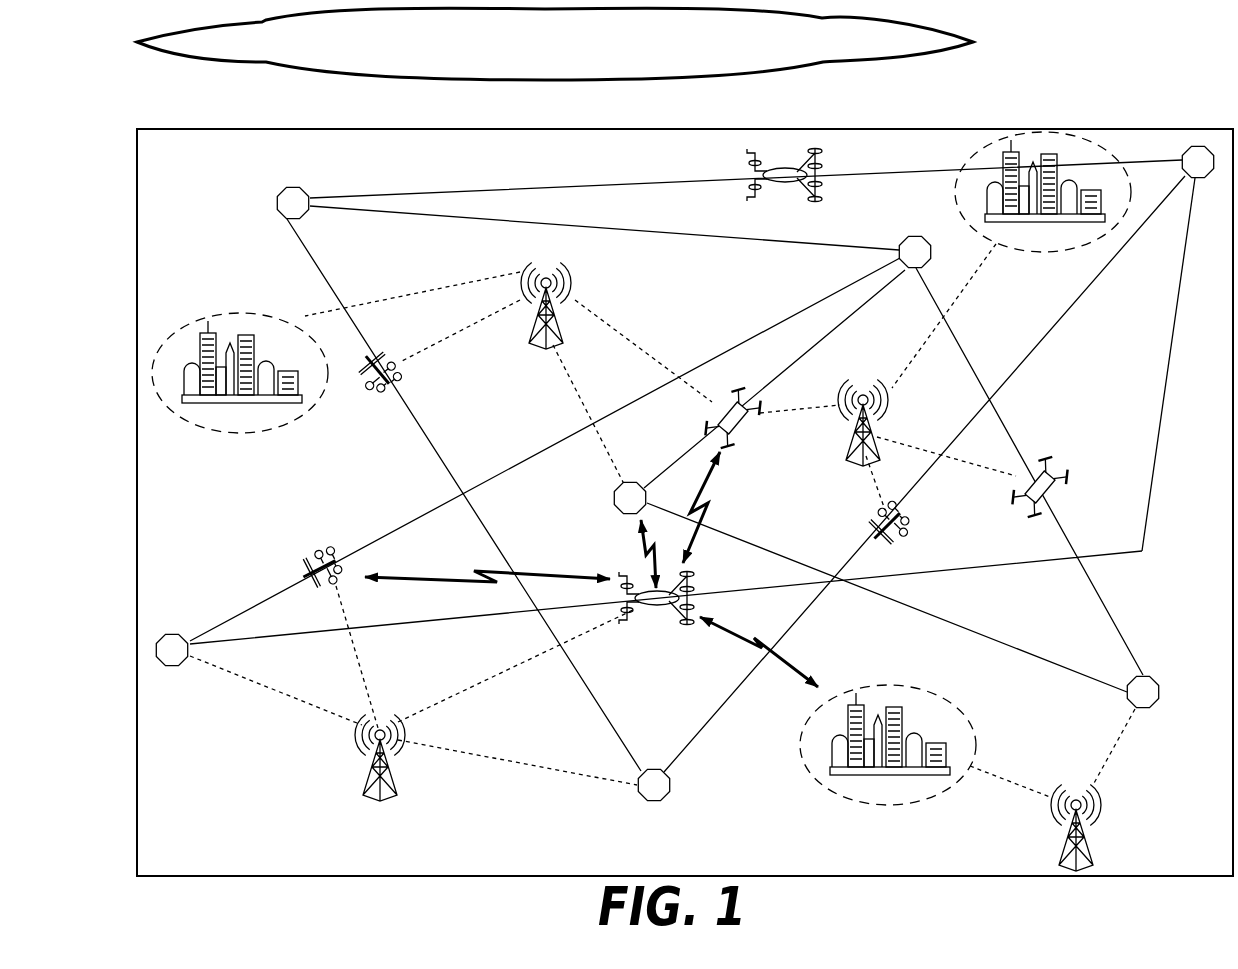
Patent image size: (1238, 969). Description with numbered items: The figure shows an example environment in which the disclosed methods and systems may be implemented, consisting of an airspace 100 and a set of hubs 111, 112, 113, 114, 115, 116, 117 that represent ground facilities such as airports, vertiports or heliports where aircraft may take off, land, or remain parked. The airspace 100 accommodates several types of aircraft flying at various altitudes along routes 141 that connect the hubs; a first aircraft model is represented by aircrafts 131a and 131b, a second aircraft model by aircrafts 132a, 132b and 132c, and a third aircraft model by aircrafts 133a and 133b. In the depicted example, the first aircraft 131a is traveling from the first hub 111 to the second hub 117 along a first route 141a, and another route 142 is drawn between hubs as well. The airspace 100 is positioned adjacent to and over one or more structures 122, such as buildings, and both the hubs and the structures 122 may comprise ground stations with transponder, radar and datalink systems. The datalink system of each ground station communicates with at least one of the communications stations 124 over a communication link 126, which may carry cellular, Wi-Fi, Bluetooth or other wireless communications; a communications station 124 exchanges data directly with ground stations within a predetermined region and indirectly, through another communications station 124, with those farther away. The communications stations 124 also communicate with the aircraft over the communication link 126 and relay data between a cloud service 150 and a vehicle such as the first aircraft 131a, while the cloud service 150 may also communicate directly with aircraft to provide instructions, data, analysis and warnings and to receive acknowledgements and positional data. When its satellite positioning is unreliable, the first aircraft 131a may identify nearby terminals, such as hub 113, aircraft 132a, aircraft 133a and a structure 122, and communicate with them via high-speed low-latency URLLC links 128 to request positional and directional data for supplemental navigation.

The airspace 100 is at (134, 194).
The cloud service 150 is at (650, 84).
The first hub 111 is at (192, 668).
The hub 112 is at (284, 192).
The hub 113 is at (626, 481).
The hub 114 is at (640, 800).
The hub 115 is at (909, 235).
The hub 116 is at (1163, 682).
The second hub 117 is at (1204, 180).
The structure 122 is at (198, 428).
The communications station 124 is at (362, 798).
The communication link 126 is at (964, 291).
The URLLC link 128 is at (442, 576).
The first aircraft 131a is at (672, 622).
The aircraft 131b is at (817, 166).
The aircraft 132a is at (336, 552).
The aircraft 132b is at (404, 353).
The aircraft 132c is at (912, 520).
The aircraft 133a is at (758, 435).
The aircraft 133b is at (1060, 468).
The route 141 is at (534, 190).
The first route 141a is at (1170, 392).
The network link 142 is at (708, 233).